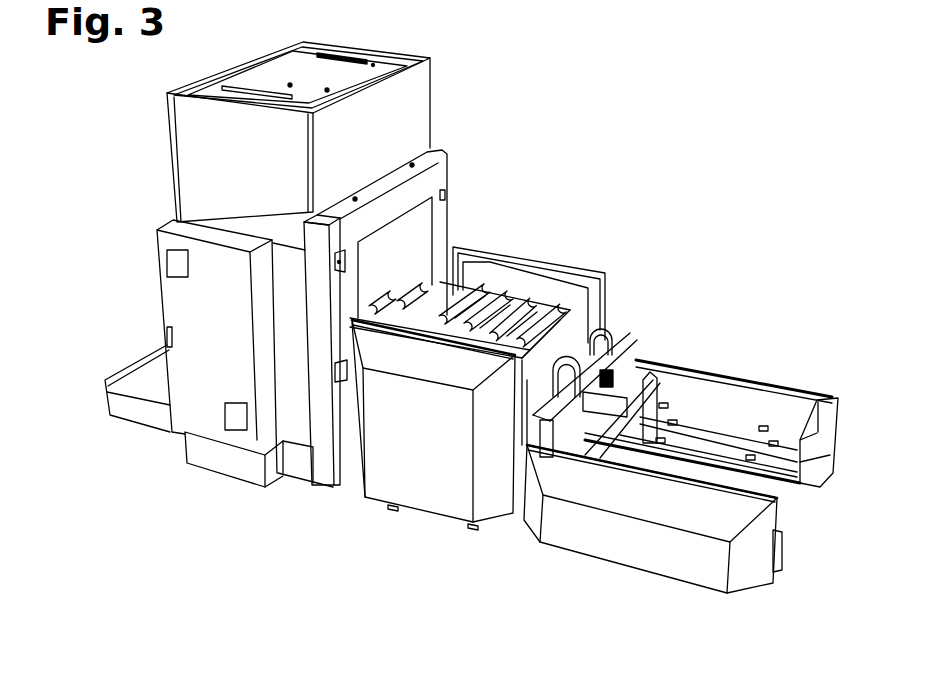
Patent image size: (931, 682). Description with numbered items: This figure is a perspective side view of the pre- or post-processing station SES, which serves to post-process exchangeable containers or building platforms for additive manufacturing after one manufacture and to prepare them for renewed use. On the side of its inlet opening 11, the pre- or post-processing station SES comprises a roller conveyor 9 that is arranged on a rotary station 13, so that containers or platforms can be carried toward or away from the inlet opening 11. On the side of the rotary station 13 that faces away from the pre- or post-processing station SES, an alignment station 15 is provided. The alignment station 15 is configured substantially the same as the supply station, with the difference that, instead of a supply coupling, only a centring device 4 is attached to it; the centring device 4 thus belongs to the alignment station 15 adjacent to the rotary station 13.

The pre- or post-processing station SES is at (213, 478).
The inlet opening 11 is at (462, 212).
The roller conveyor 9 is at (549, 305).
The centring device 4 is at (608, 390).
The rotary station 13 is at (440, 490).
The alignment station 15 is at (631, 581).